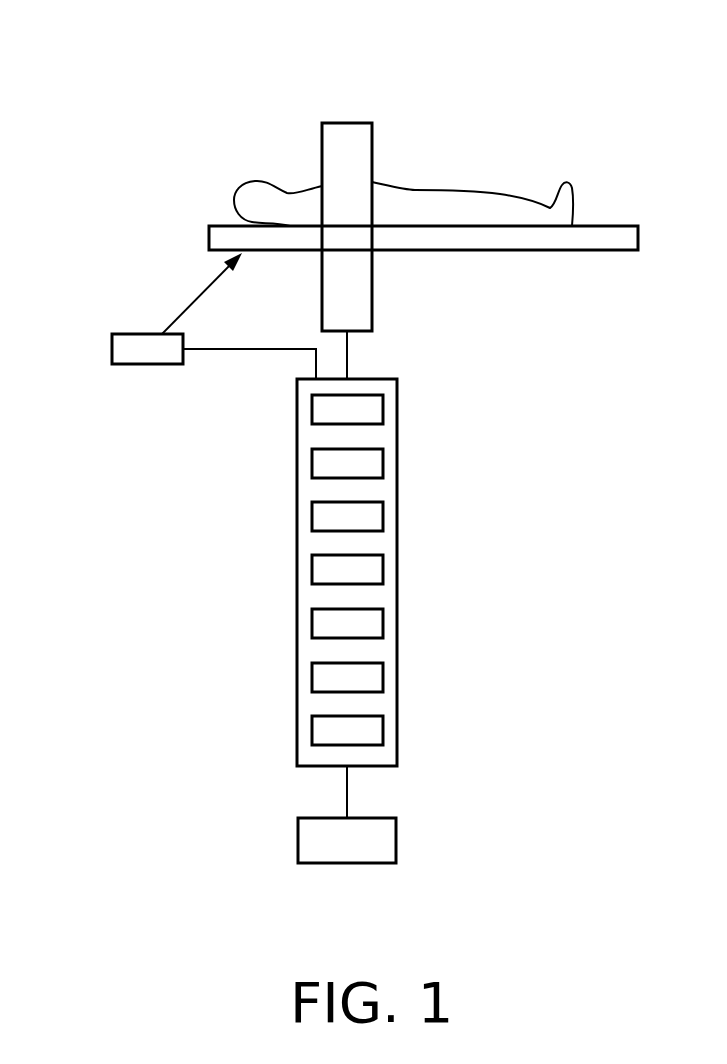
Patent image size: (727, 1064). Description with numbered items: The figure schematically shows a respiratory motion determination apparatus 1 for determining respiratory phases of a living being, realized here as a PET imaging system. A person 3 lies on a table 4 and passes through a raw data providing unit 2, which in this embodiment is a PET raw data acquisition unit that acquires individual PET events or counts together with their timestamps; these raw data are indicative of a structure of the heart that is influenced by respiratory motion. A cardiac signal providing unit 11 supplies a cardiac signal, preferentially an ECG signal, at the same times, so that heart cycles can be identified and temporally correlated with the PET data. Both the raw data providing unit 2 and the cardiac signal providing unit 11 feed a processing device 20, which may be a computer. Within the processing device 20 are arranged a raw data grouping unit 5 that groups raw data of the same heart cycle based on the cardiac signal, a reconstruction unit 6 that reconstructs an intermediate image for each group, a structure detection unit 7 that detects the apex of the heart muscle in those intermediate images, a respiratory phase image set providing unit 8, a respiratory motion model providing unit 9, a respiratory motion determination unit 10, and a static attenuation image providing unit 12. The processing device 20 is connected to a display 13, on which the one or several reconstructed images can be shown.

The respiratory motion determination apparatus 1 is at (491, 73).
The raw data providing unit 2 is at (373, 302).
The person 3 is at (270, 170).
The table 4 is at (580, 251).
The raw data grouping unit 5 is at (383, 407).
The reconstruction unit 6 is at (383, 461).
The structure detection unit 7 is at (383, 514).
The respiratory phase image set providing unit 8 is at (383, 567).
The respiratory motion model providing unit 9 is at (383, 621).
The respiratory motion determination unit 10 is at (383, 675).
The cardiac signal providing unit 11 is at (110, 351).
The static attenuation image providing unit 12 is at (383, 728).
The display 13 is at (397, 838).
The processing device 20 is at (296, 405).